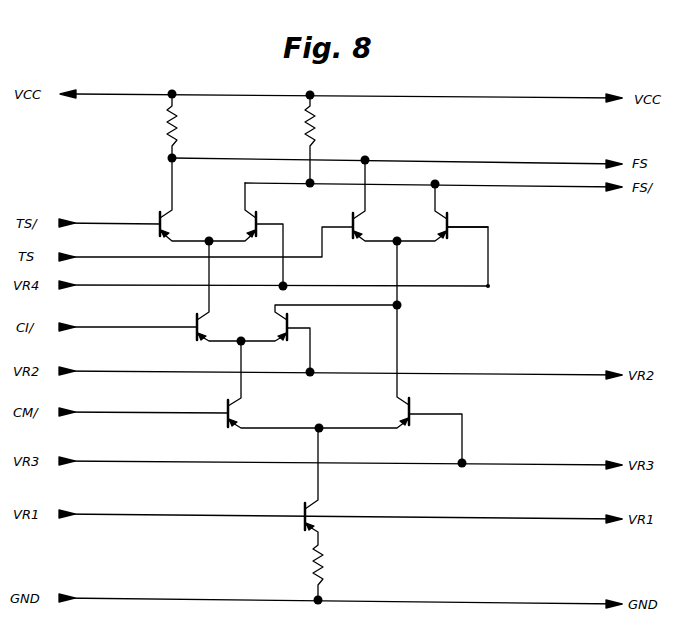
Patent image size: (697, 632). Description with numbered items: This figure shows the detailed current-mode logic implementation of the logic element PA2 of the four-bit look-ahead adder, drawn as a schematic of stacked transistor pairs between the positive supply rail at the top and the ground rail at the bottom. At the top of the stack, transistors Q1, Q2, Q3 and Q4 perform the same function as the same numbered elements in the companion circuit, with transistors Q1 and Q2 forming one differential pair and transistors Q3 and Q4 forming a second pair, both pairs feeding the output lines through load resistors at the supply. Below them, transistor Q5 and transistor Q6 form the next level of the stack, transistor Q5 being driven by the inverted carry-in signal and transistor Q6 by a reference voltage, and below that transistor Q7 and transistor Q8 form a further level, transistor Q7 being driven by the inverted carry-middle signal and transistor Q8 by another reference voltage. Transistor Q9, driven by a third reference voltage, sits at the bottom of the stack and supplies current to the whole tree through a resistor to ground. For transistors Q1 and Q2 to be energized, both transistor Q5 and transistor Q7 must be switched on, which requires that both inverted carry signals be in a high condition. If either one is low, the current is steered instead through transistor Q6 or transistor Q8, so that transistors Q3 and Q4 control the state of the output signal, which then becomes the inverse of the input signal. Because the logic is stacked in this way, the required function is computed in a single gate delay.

The transistor Q1 is at (184, 199).
The transistor Q2 is at (246, 234).
The transistor Q3 is at (375, 200).
The transistor Q4 is at (442, 212).
The transistor Q5 is at (219, 291).
The transistor Q6 is at (319, 338).
The transistor Q7 is at (273, 384).
The transistor Q8 is at (390, 352).
The transistor Q9 is at (325, 514).